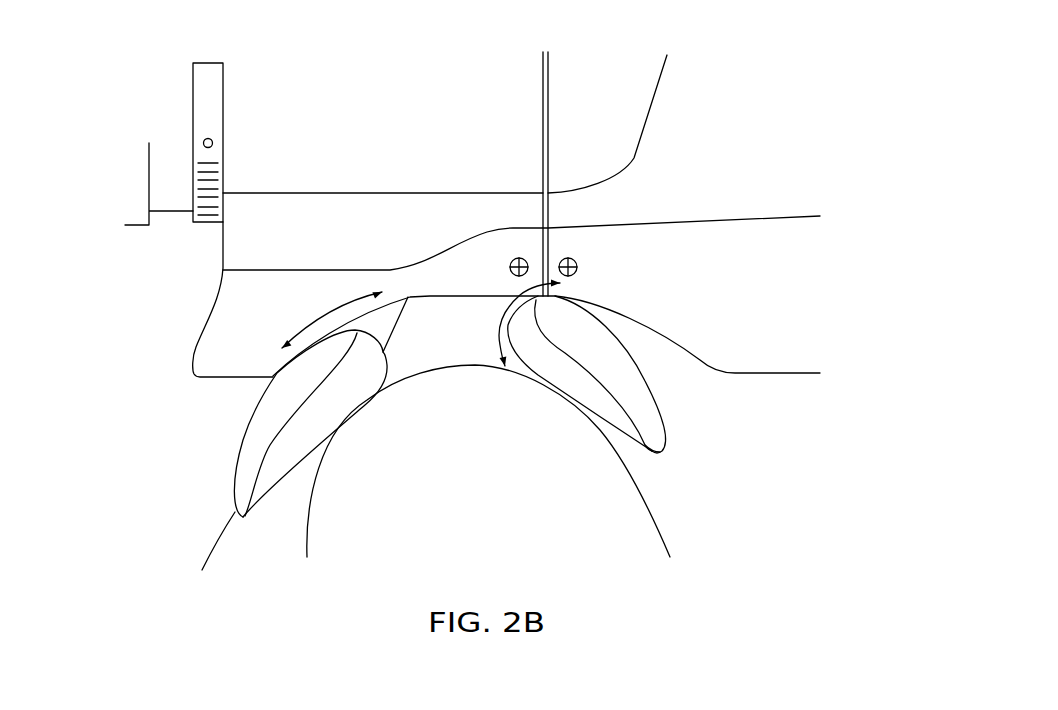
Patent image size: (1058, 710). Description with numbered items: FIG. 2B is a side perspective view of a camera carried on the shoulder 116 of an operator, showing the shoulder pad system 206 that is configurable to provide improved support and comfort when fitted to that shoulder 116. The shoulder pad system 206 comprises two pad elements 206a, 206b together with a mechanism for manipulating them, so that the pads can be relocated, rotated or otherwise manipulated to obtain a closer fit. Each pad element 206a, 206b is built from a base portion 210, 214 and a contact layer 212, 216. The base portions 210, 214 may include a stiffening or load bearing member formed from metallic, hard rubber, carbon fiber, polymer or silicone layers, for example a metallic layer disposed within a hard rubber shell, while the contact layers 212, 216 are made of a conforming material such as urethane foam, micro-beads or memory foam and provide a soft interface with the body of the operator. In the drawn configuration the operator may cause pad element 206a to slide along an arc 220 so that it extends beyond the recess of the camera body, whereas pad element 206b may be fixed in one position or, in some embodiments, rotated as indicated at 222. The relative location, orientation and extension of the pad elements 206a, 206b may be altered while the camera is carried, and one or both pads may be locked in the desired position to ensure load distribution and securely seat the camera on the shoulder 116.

The shoulder 116 is at (485, 500).
The shoulder pad system 206 is at (186, 406).
The pad element 206a is at (240, 522).
The pad element 206b is at (672, 462).
The base portion 210 is at (240, 468).
The contact layer 212 is at (303, 453).
The base portion 214 is at (635, 366).
The contact layer 216 is at (581, 395).
The arc 220 is at (328, 317).
The rotation 222 is at (499, 299).